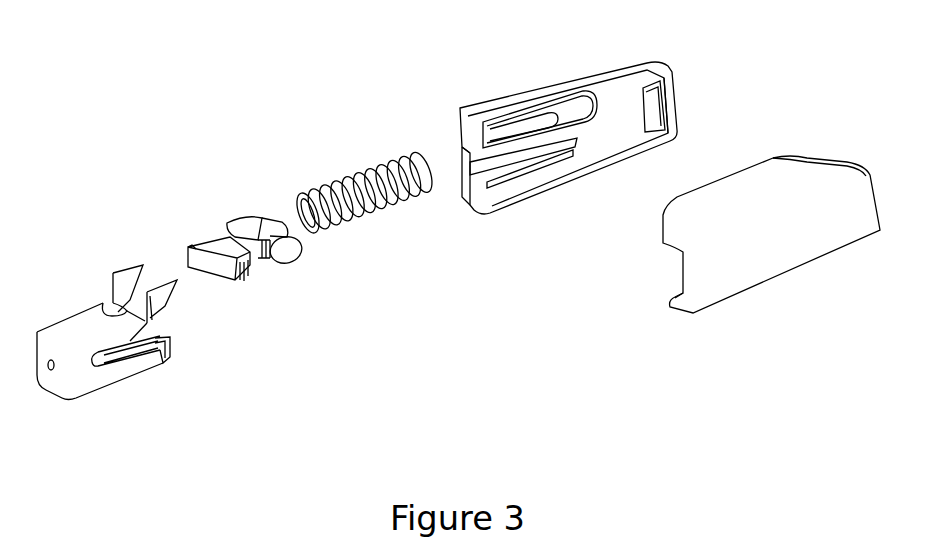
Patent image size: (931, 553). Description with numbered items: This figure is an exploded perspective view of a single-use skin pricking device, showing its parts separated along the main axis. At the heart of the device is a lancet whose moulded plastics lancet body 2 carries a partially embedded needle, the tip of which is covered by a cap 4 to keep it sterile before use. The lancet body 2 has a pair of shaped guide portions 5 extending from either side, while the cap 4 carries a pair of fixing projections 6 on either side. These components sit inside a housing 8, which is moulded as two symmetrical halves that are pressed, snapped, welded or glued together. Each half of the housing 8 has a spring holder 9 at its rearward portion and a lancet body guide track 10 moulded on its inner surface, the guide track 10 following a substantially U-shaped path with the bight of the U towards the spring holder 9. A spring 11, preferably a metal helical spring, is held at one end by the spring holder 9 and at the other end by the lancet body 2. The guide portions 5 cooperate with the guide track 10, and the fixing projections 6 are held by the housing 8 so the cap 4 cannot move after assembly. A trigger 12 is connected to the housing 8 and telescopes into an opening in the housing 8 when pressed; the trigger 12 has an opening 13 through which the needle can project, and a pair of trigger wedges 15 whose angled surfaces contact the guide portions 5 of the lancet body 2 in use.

The lancet body 2 is at (224, 222).
The cap 4 is at (217, 253).
The guide portions 5 is at (240, 223).
The fixing projections 6 is at (192, 245).
The housing 8 is at (568, 155).
The spring holder 9 is at (650, 107).
The lancet body guide track 10 is at (563, 118).
The spring 11 is at (362, 173).
The trigger 12 is at (67, 330).
The opening 13 is at (51, 370).
The trigger wedges 15 is at (160, 307).